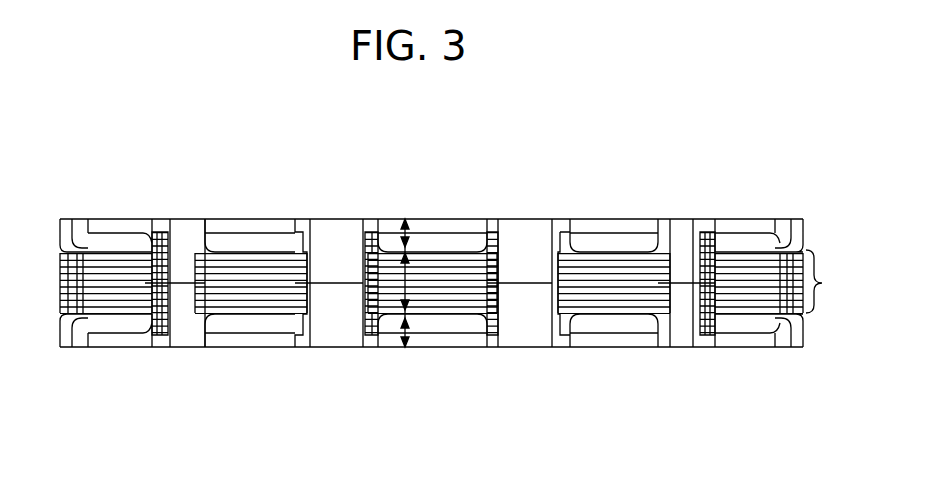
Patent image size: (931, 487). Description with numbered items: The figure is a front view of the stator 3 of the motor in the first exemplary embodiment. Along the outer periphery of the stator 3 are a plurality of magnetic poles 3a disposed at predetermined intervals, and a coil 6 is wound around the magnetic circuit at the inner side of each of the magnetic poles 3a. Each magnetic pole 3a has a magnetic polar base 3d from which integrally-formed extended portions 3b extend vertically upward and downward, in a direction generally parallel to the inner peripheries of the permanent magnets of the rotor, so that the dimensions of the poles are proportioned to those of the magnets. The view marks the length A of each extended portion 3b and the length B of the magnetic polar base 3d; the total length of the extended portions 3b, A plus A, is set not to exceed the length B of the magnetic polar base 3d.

The stator 3 is at (188, 235).
The magnetic pole 3a is at (467, 267).
The extended portion 3b is at (445, 245).
The magnetic polar base 3d is at (418, 285).
The coil 6 is at (372, 243).
The length of extended portion A is at (405, 222).
The length of magnetic polar base B is at (368, 340).